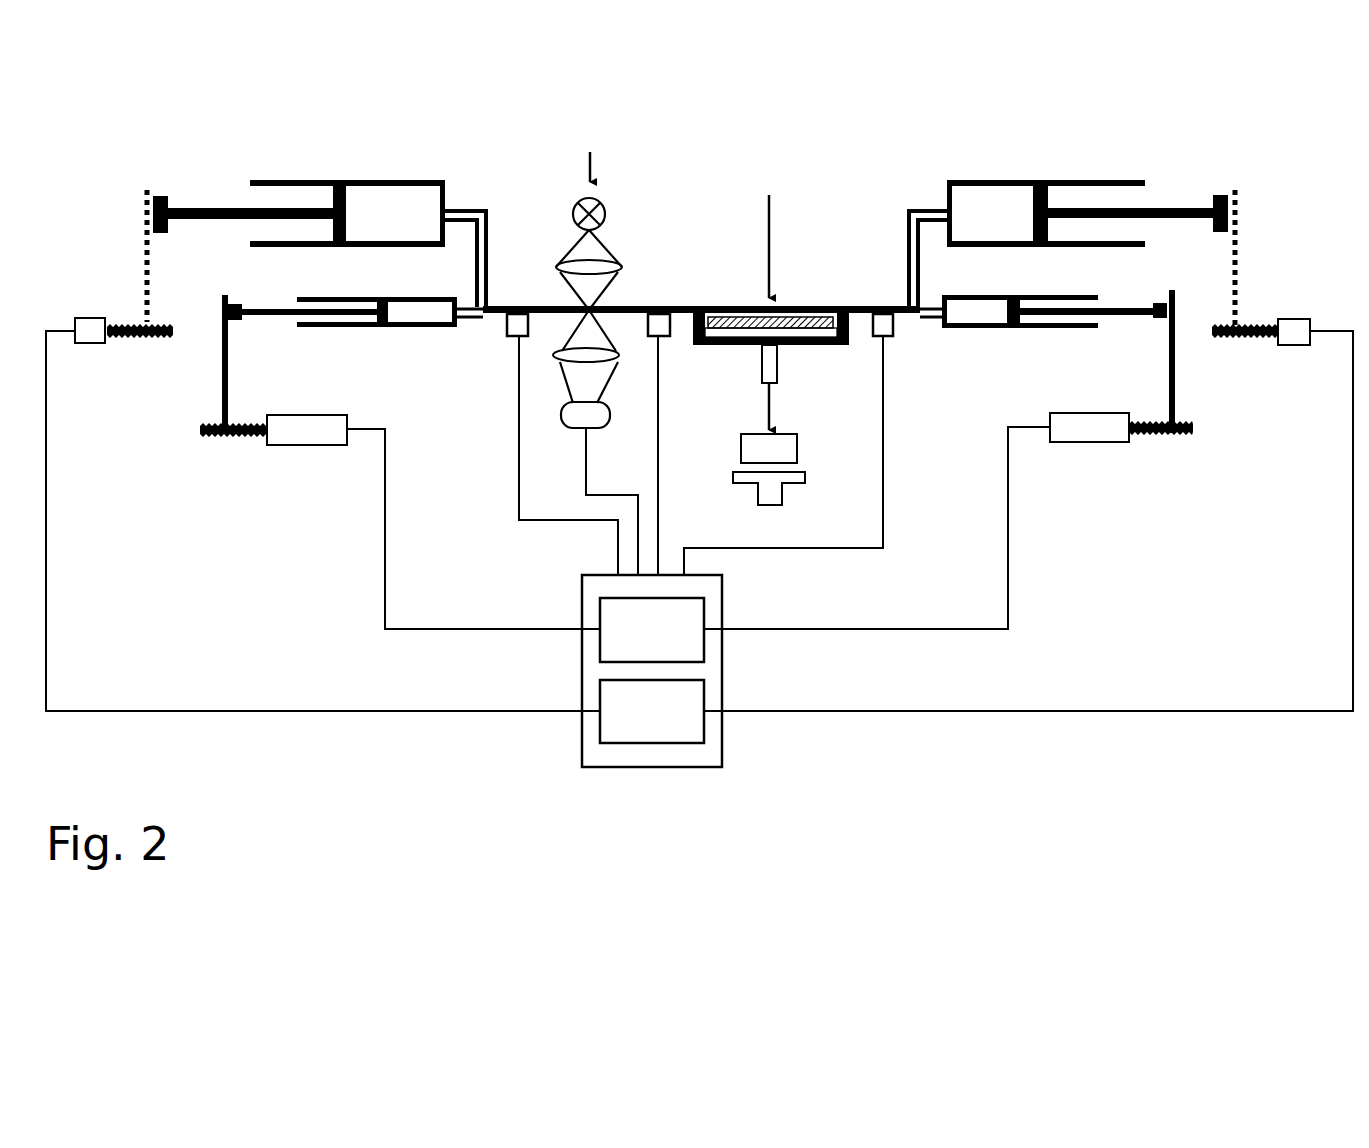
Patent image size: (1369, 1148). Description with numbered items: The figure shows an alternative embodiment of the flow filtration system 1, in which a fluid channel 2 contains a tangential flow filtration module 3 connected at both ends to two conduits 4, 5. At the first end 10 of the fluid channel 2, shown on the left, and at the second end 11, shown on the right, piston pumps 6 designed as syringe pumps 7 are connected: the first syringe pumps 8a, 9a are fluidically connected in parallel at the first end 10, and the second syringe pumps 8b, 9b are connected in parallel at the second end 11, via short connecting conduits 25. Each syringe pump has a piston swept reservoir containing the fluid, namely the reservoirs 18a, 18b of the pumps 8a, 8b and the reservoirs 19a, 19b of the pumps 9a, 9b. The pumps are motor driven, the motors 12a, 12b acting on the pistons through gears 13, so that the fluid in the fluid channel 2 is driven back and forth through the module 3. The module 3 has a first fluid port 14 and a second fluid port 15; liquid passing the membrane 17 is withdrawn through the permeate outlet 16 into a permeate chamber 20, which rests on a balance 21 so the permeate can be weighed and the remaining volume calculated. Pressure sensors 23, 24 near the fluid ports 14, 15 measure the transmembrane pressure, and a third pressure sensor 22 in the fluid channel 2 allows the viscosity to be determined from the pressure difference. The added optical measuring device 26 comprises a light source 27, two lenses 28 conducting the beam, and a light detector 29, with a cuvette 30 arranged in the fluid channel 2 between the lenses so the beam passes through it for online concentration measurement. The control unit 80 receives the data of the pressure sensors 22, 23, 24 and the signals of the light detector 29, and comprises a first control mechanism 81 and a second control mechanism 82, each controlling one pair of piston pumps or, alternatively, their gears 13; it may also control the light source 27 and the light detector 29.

The filtration system 1 is at (690, 134).
The fluid channel 2 is at (685, 305).
The tangential flow filtration module 3 is at (768, 236).
The conduit 4 is at (640, 305).
The conduit 5 is at (862, 305).
The piston pump 6 is at (370, 235).
The syringe pump 7 is at (445, 200).
The first syringe pump 8a is at (347, 213).
The second syringe pump 8b is at (1046, 213).
The first syringe pump 9a is at (407, 308).
The second syringe pump 9b is at (965, 307).
The first end 10 is at (490, 307).
The second end 11 is at (897, 305).
The motor 12a is at (90, 343).
The motor 12b is at (1290, 345).
The gear 13 is at (163, 340).
The first fluid port 14 is at (705, 307).
The second fluid port 15 is at (840, 300).
The permeate outlet 16 is at (762, 365).
The membrane 17 is at (800, 328).
The piston swept reservoir 18a is at (413, 193).
The piston swept reservoir 18b is at (1022, 235).
The piston swept reservoir 19a is at (398, 317).
The piston swept reservoir 19b is at (997, 318).
The permeate chamber 20 is at (790, 450).
The balance 21 is at (800, 478).
The third pressure sensor 22 is at (510, 330).
The pressure sensor 23 is at (660, 327).
The pressure sensor 24 is at (898, 328).
The connecting conduit 25 is at (488, 215).
The optical measuring device 26 is at (590, 155).
The light source 27 is at (603, 206).
The lens 28 is at (620, 267).
The light detector 29 is at (598, 418).
The cuvette 30 is at (620, 320).
The control unit 80 is at (720, 735).
The first control mechanism 81 is at (652, 711).
The second control mechanism 82 is at (652, 630).